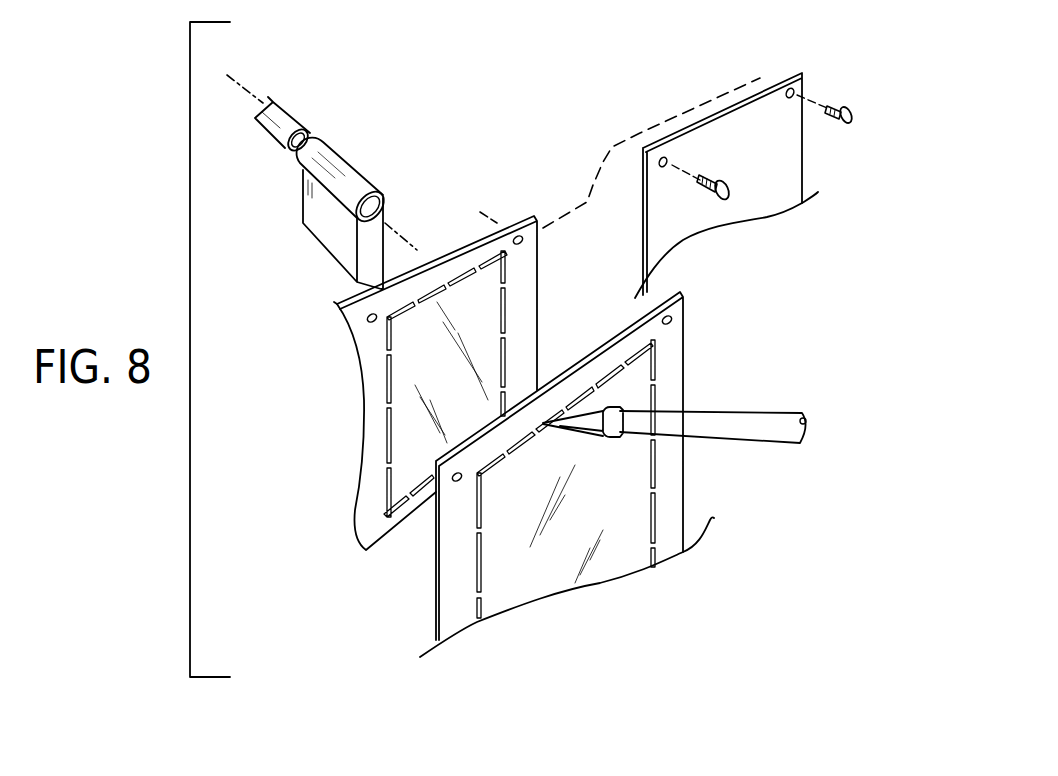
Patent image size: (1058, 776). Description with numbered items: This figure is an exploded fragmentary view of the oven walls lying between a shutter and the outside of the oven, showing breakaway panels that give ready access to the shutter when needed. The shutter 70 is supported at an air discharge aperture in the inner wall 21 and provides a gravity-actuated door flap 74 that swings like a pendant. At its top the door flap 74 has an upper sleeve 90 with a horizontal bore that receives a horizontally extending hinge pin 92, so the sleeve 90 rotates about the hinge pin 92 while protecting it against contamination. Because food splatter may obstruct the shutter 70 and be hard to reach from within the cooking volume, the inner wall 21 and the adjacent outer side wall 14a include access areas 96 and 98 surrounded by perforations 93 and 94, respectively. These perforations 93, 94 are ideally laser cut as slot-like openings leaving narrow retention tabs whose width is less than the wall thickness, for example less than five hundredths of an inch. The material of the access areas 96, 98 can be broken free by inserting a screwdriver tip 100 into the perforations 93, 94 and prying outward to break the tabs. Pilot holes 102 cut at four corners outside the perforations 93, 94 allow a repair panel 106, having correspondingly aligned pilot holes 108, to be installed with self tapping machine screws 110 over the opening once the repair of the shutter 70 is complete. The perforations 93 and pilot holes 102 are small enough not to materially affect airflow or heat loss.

The right outer side wall 14a is at (667, 512).
The inner wall 21 is at (525, 290).
The shutter 70 is at (362, 136).
The door flap 74 is at (312, 200).
The upper sleeve 90 is at (357, 184).
The hinge pin 92 is at (293, 118).
The perforations 93 is at (388, 377).
The perforations 94 is at (478, 562).
The access area 96 is at (410, 413).
The access area 98 is at (503, 583).
The screwdriver tip 100 is at (608, 408).
The pilot holes 102 is at (517, 232).
The repair panel 106 is at (773, 168).
The pilot holes 108 is at (797, 90).
The self tapping machine screws 110 is at (846, 104).